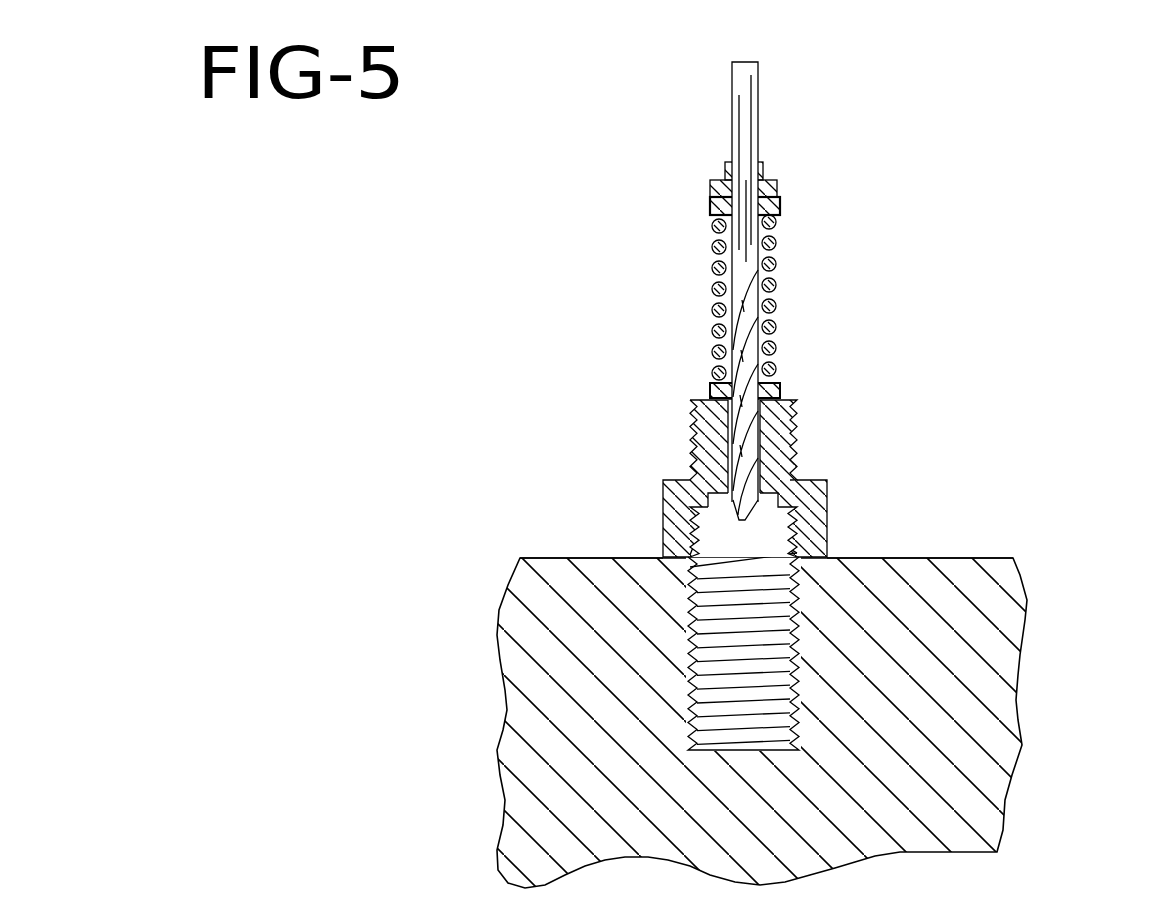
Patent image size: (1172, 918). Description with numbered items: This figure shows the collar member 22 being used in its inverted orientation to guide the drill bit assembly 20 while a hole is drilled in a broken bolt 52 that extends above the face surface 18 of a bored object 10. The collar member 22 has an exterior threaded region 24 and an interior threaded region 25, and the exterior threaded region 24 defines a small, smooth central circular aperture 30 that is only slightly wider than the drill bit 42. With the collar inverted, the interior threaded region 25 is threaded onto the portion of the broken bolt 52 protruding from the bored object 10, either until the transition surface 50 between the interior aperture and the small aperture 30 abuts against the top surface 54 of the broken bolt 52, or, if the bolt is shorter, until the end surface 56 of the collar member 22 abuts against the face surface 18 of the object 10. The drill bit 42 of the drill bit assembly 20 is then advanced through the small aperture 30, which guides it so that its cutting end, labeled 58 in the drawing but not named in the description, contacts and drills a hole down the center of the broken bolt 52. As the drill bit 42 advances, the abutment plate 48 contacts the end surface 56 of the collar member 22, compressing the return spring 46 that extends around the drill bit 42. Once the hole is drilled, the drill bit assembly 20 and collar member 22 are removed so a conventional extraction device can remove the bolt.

The object 10 is at (1005, 792).
The face surface 18 is at (537, 557).
The drill bit assembly 20 is at (774, 291).
The collar member 22 is at (743, 443).
The exterior threaded region 24 is at (808, 400).
The interior threaded region 25 is at (835, 480).
The central circular aperture 30 is at (730, 492).
The drill bit 42 is at (728, 447).
The return spring 46 is at (772, 225).
The abutment plate 48 is at (778, 390).
The transition surface 50 is at (665, 503).
The broken bolt 52 is at (772, 620).
The top surface 54 is at (688, 560).
The end surface 56 is at (690, 545).
The cutting end of tap 58 is at (728, 447).